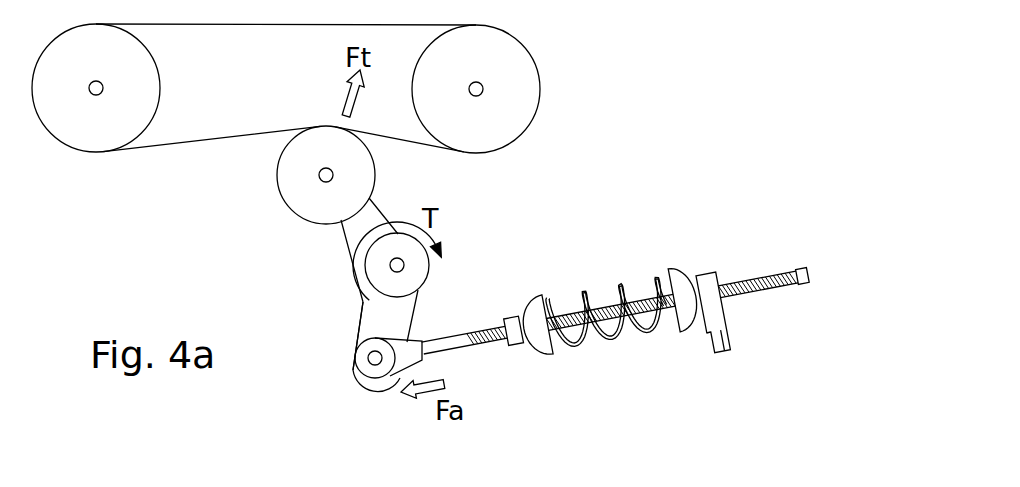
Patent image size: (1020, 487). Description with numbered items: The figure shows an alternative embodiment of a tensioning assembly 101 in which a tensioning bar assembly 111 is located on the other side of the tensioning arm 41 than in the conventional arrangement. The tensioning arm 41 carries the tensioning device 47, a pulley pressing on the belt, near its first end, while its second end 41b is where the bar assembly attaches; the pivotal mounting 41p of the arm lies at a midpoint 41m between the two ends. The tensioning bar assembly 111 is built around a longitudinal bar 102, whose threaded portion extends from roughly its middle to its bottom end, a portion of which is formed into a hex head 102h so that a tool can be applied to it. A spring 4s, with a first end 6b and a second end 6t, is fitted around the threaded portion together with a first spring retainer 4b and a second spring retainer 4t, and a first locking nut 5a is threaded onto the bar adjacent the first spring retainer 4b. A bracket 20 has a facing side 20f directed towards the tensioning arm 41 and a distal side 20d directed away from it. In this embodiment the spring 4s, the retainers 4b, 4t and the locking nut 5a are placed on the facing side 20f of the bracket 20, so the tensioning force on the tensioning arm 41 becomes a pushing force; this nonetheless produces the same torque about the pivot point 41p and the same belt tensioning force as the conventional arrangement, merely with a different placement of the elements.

The tensioning device 47 is at (282, 183).
The tensioning arm 41 is at (353, 228).
The pivotal mounting 41p is at (400, 268).
The midpoint 41m is at (367, 280).
The second end 41b is at (356, 384).
The tensioning assembly 101 is at (593, 168).
The tensioning bar assembly 111 is at (810, 198).
The longitudinal bar 102 is at (773, 294).
The hex head 102h is at (801, 268).
The first locking nut 5a is at (522, 347).
The first spring retainer 4b is at (541, 294).
The spring 4s is at (635, 284).
The second spring retainer 4t is at (698, 272).
The first end of the spring 6b is at (568, 340).
The second end of the spring 6t is at (663, 267).
The bracket 20 is at (729, 352).
The distal side 20d is at (731, 330).
The facing side 20f is at (711, 333).